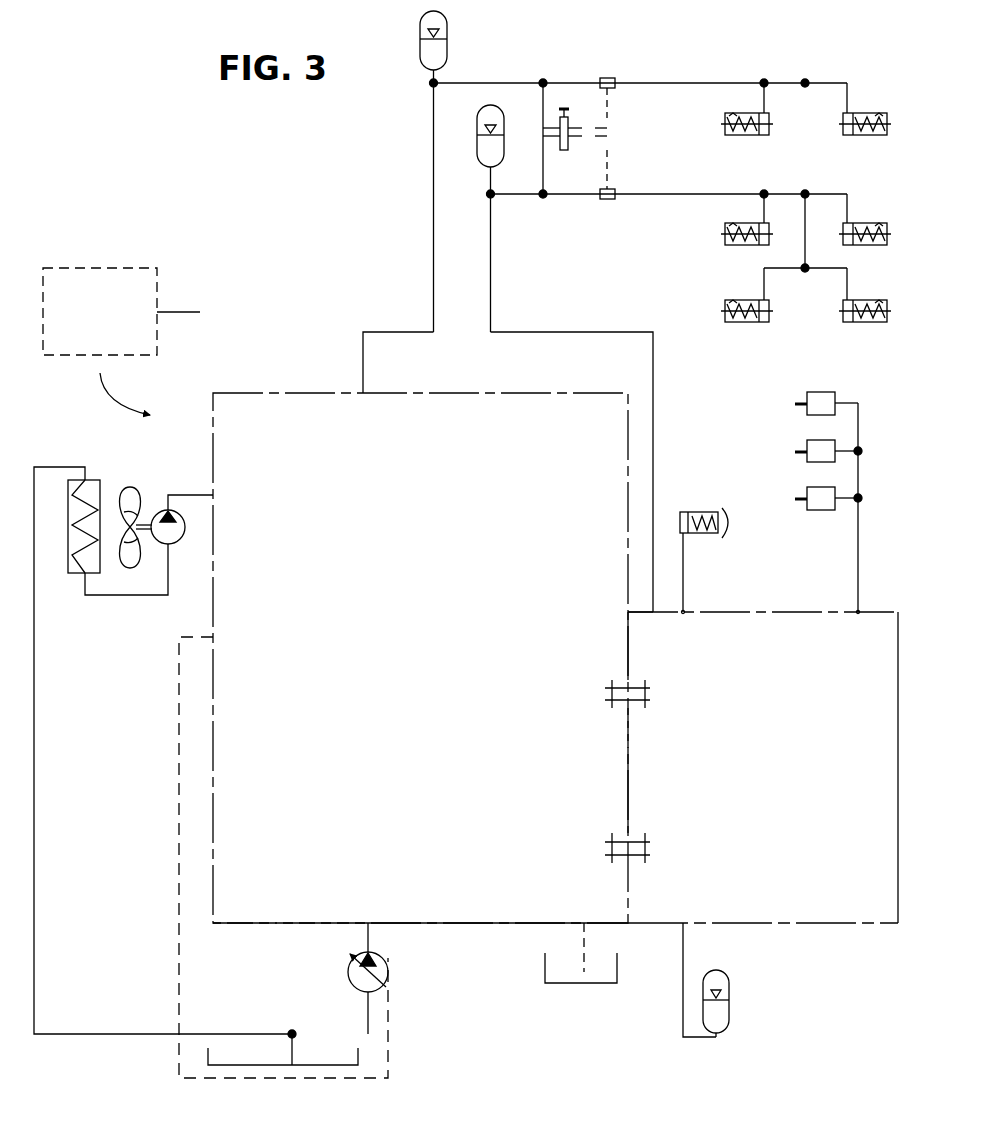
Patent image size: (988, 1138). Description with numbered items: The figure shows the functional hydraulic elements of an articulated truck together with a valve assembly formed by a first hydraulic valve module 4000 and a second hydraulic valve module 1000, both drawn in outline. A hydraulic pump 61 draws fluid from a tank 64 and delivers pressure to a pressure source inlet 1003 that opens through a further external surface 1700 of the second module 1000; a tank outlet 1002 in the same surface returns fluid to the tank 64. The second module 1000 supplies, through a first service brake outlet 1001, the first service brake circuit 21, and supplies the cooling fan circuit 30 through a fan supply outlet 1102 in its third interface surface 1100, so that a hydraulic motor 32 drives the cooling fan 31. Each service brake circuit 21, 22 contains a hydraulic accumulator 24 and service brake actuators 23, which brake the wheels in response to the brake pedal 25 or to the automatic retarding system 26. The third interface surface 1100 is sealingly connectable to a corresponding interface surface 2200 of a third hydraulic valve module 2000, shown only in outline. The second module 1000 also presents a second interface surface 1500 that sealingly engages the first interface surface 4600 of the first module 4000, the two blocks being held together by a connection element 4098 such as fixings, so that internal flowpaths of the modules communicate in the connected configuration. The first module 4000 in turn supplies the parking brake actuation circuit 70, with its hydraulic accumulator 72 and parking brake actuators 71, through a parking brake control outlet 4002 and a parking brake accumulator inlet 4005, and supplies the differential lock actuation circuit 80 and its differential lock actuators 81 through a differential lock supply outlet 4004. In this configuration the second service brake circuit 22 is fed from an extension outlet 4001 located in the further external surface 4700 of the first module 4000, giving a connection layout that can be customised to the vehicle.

The first service brake circuit 21 is at (684, 82).
The second service brake circuit 22 is at (674, 196).
The service brake actuators 23 is at (738, 136).
The hydraulic accumulator 24 is at (448, 30).
The brake pedal 25 is at (566, 104).
The automatic retarding system 26 is at (611, 72).
The cooling fan circuit 30 is at (126, 596).
The cooling fan 31 is at (126, 486).
The hydraulic motor 32 is at (180, 541).
The hydraulic pump 61 is at (390, 968).
The tank 64 is at (332, 1080).
The parking brake actuation circuit 70 is at (684, 568).
The parking brake actuators 71 is at (708, 506).
The hydraulic accumulator 72 is at (730, 990).
The differential lock actuation circuit 80 is at (856, 554).
The differential lock actuators 81 is at (808, 394).
The second hydraulic valve module 1000 is at (420, 658).
The first service brake outlet 1001 is at (364, 392).
The tank outlet 1002 is at (584, 921).
The pressure source inlet 1003 is at (369, 922).
The third interface surface 1100 is at (212, 789).
The fan supply outlet 1102 is at (212, 492).
The second interface surface 1500 is at (630, 783).
The further external surface 1700 is at (480, 925).
The third hydraulic valve module 2000 is at (100, 311).
The interface surface 2200 is at (182, 358).
The first hydraulic valve module 4000 is at (763, 767).
The extension outlet 4001 is at (652, 616).
The parking brake control outlet 4002 is at (684, 614).
The differential lock supply outlet 4004 is at (858, 616).
The parking brake accumulator inlet 4005 is at (683, 922).
The connection element 4098 is at (608, 674).
The first interface surface 4600 is at (628, 755).
The further external surface 4700 is at (840, 610).